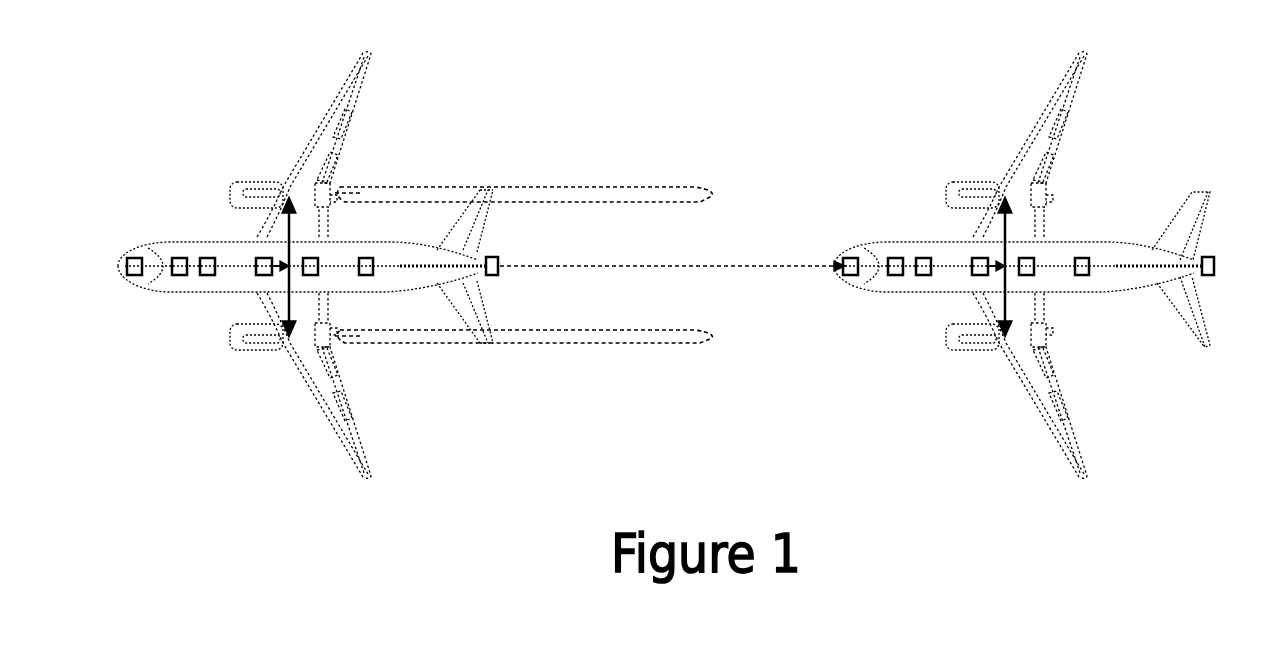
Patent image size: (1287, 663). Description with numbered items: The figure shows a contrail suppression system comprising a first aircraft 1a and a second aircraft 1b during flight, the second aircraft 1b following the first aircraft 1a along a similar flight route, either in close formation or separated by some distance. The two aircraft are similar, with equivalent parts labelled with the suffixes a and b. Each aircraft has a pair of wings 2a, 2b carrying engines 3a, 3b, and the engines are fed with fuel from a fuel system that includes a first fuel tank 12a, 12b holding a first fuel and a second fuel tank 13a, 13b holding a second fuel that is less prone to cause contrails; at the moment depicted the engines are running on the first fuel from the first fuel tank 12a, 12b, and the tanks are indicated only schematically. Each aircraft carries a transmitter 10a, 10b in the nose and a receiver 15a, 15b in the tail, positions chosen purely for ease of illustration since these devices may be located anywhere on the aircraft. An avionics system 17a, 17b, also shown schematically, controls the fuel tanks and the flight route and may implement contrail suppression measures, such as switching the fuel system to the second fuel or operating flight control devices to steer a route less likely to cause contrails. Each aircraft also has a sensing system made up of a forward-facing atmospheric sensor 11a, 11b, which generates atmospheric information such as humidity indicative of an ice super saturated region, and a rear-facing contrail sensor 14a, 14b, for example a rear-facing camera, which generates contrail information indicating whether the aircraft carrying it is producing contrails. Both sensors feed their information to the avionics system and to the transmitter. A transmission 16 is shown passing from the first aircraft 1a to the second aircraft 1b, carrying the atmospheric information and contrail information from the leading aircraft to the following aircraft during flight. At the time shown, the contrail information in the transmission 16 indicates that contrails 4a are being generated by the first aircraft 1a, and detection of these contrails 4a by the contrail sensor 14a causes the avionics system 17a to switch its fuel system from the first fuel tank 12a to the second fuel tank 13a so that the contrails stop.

The first aircraft 1a is at (199, 163).
The second aircraft 1b is at (915, 163).
The wings 2a is at (325, 128).
The wings 2b is at (1042, 128).
The engines 3a is at (250, 182).
The engines 3b is at (967, 182).
The contrails 4a is at (565, 187).
The transmitter 10a is at (133, 256).
The receiver 10b is at (849, 256).
The forward-facing atmospheric sensor 11a is at (178, 256).
The forward-facing atmospheric sensor 11b is at (894, 256).
The first fuel tank 12a is at (254, 258).
The first fuel tank 12b is at (970, 258).
The second fuel tank 13a is at (320, 262).
The second fuel tank 13b is at (1036, 262).
The rear-facing contrail sensor 14a is at (368, 278).
The rear-facing contrail sensor 14b is at (1084, 278).
The receiver 15a is at (495, 278).
The receiver 15b is at (1211, 278).
The transmission 16 is at (726, 268).
The avionics system 17a is at (208, 278).
The avionics system 17b is at (923, 278).